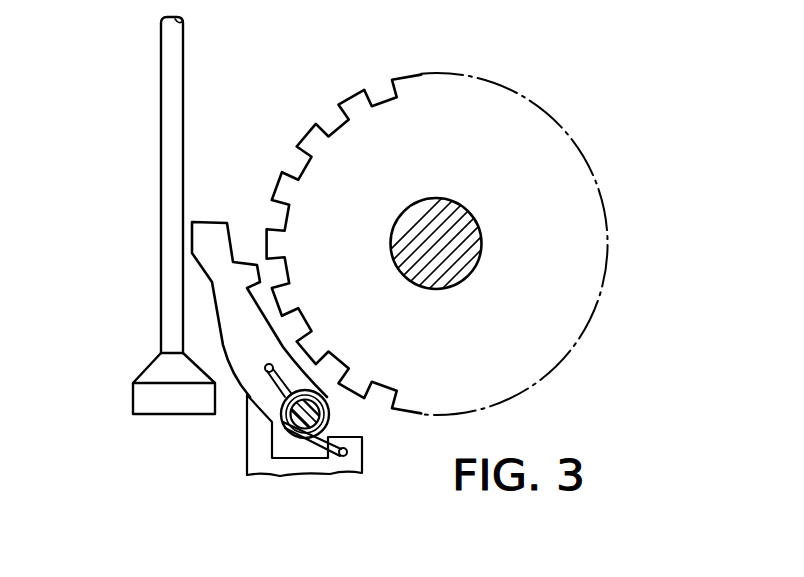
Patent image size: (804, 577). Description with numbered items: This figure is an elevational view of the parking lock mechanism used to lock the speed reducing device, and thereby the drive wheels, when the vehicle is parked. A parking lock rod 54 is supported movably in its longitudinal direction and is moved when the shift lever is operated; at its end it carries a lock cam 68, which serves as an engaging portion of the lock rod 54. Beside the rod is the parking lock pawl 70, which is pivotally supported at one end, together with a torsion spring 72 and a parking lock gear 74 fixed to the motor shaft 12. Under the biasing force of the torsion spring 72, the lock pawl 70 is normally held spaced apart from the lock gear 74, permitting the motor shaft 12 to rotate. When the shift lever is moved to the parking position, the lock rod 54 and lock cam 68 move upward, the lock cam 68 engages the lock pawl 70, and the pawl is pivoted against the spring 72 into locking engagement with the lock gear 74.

The motor shaft 12 is at (465, 224).
The parking lock rod 54 is at (165, 172).
The lock cam 68 is at (142, 400).
The parking lock pawl 70 is at (207, 231).
The torsion spring 72 is at (273, 450).
The parking lock gear 74 is at (367, 130).